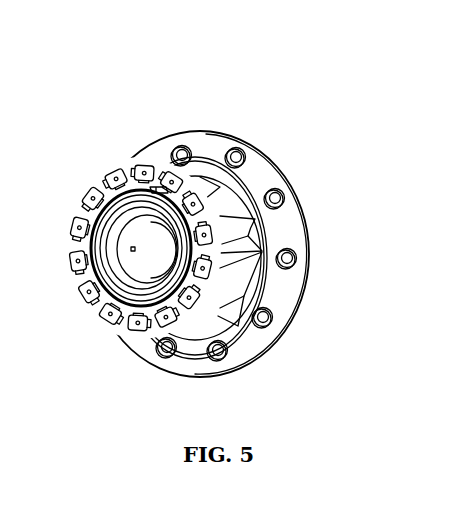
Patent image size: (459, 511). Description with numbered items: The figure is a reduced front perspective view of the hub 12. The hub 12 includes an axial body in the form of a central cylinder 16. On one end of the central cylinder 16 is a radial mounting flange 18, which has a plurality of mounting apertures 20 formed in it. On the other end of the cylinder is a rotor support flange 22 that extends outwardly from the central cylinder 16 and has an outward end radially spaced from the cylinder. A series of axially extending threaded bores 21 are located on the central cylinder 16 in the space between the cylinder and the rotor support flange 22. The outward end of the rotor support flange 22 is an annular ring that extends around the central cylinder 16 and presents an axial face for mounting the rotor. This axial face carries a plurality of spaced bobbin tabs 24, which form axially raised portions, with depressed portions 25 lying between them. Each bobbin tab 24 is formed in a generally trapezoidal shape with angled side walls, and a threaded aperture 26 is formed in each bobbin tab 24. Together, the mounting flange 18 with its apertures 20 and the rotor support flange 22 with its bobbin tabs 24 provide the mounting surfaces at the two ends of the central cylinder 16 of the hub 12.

The hub 12 is at (201, 231).
The central cylinder 16 is at (222, 210).
The radial mounting flange 18 is at (293, 226).
The mounting apertures 20 is at (287, 260).
The threaded bores 21 is at (162, 187).
The rotor support flange 22 is at (105, 174).
The bobbin tabs 24 is at (74, 224).
The depressed portions 25 is at (119, 327).
The threaded aperture 26 is at (82, 299).